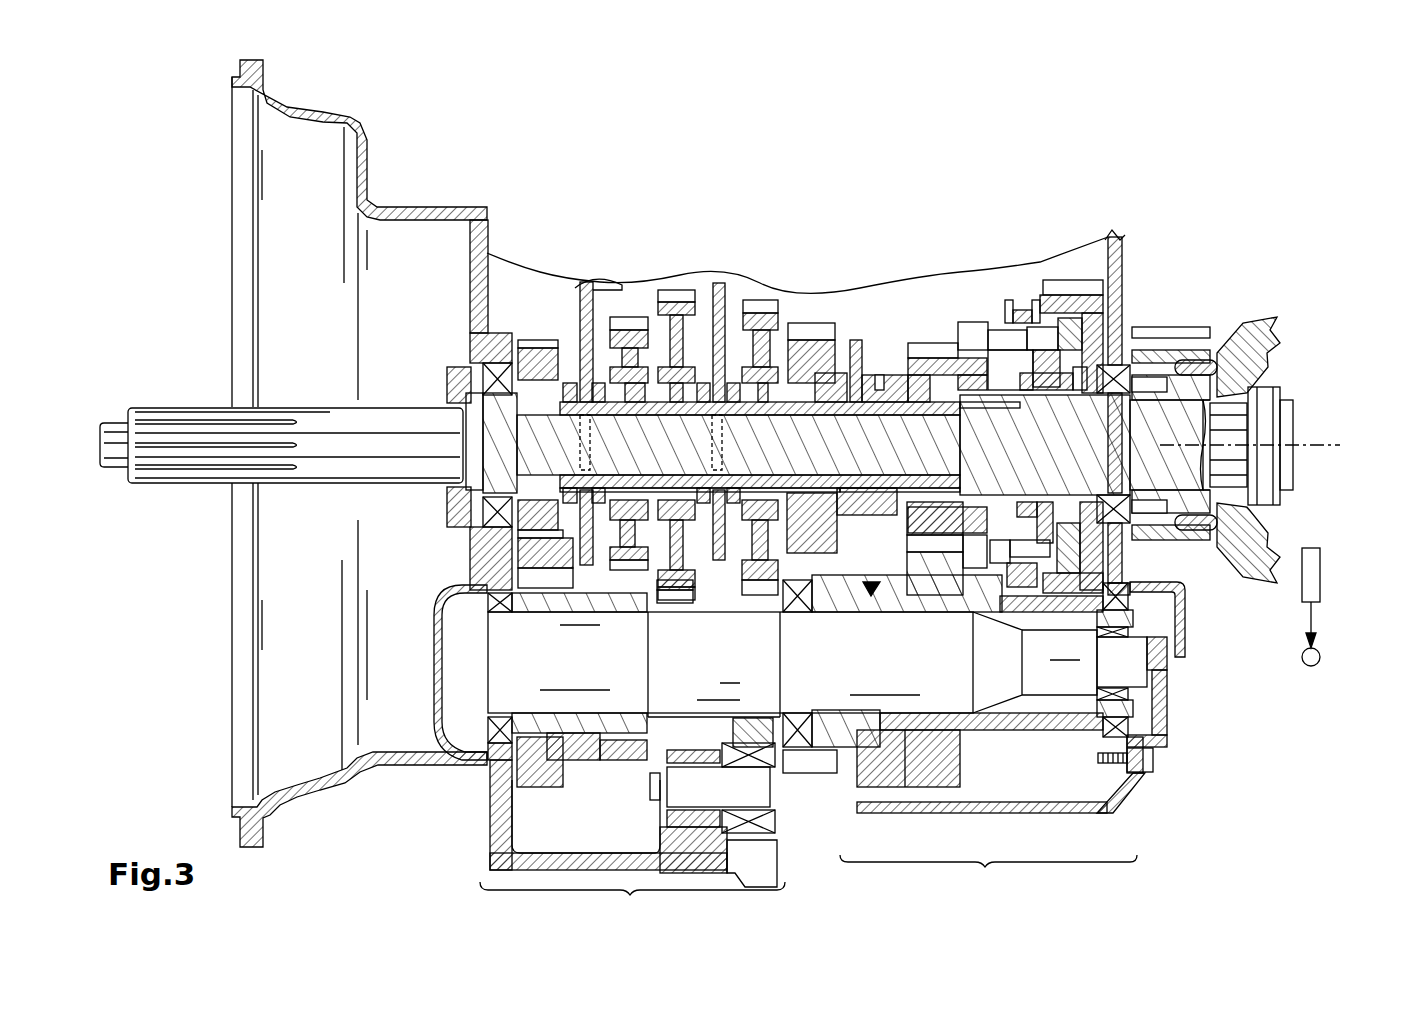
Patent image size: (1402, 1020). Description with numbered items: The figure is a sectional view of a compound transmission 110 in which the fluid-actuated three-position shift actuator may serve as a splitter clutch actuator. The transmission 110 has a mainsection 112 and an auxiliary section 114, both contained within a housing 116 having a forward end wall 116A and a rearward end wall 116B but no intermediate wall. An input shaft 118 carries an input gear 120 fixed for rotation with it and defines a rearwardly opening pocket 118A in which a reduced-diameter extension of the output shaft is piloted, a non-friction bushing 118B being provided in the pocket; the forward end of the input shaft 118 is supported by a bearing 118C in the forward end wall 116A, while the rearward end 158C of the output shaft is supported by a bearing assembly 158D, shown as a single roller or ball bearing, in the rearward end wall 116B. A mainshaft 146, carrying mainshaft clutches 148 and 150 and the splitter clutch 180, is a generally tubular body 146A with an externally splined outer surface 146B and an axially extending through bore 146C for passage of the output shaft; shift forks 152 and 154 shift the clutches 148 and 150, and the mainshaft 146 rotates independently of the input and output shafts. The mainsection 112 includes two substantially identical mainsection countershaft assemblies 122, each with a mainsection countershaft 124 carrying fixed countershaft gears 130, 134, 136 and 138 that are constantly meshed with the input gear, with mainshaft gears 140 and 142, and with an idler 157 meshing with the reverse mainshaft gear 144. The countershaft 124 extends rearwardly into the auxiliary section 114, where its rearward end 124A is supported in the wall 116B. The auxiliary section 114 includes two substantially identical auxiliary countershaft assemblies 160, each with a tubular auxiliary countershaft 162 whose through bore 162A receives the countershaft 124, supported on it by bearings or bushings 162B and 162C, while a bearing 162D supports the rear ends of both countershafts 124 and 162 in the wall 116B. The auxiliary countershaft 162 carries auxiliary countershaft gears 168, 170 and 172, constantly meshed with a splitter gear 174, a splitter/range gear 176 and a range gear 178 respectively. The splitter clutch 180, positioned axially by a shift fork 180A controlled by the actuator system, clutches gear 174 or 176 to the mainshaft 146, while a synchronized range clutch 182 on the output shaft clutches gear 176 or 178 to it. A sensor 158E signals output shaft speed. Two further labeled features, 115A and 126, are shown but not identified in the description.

The compound transmission 110 is at (1158, 232).
The mainsection 112 is at (632, 903).
The auxiliary section 114 is at (988, 872).
The input hub 115A is at (470, 420).
The housing 116 is at (1095, 815).
The forward end wall 116A is at (498, 808).
The rearward end wall 116B is at (1118, 555).
The input shaft 118 is at (344, 420).
The rearwardly opening pocket 118A is at (470, 408).
The non-friction bushing 118B is at (460, 492).
The bearing 118C is at (475, 360).
The input gear 120 is at (540, 348).
The mainsection countershaft assembly 122 is at (580, 770).
The mainsection countershaft 124 is at (913, 650).
The rearward end 124A is at (1135, 668).
The housing wall 126 is at (440, 630).
The countershaft gear 130 is at (542, 779).
The countershaft gear 134 is at (590, 770).
The countershaft gear 136 is at (660, 725).
The countershaft gear 138 is at (757, 608).
The mainshaft gear 140 is at (625, 545).
The mainshaft gear 142 is at (683, 560).
The reverse mainshaft gear 144 is at (765, 540).
The mainshaft 146 is at (868, 415).
The generally tubular body 146A is at (990, 412).
The externally splined outer surface 146B is at (780, 485).
The axially extending through bore 146C is at (932, 478).
The mainshaft clutch 148 is at (620, 420).
The mainshaft clutch 150 is at (745, 410).
The shift fork 152 is at (588, 282).
The shift fork 154 is at (722, 283).
The idler 157 is at (770, 848).
The rearward end of output shaft 158C is at (1262, 340).
The bearing assembly 158D is at (1128, 320).
The sensor 158E is at (1322, 572).
The auxiliary countershaft assembly 160 is at (1042, 740).
The auxiliary countershaft 162 is at (975, 728).
The through bore 162A is at (870, 735).
The bearing or bushing 162B is at (812, 606).
The bearing or bushing 162C is at (1097, 662).
The bearing 162D is at (1135, 718).
The auxiliary countershaft gear 168 is at (792, 773).
The auxiliary countershaft gear 170 is at (937, 790).
The auxiliary countershaft gear 172 is at (1072, 722).
The splitter gear 174 is at (803, 330).
The splitter/range gear 176 is at (930, 345).
The range gear 178 is at (1073, 292).
The splitter clutch 180 is at (880, 375).
The shift fork 180A is at (855, 340).
The synchronized range clutch 182 is at (1150, 444).